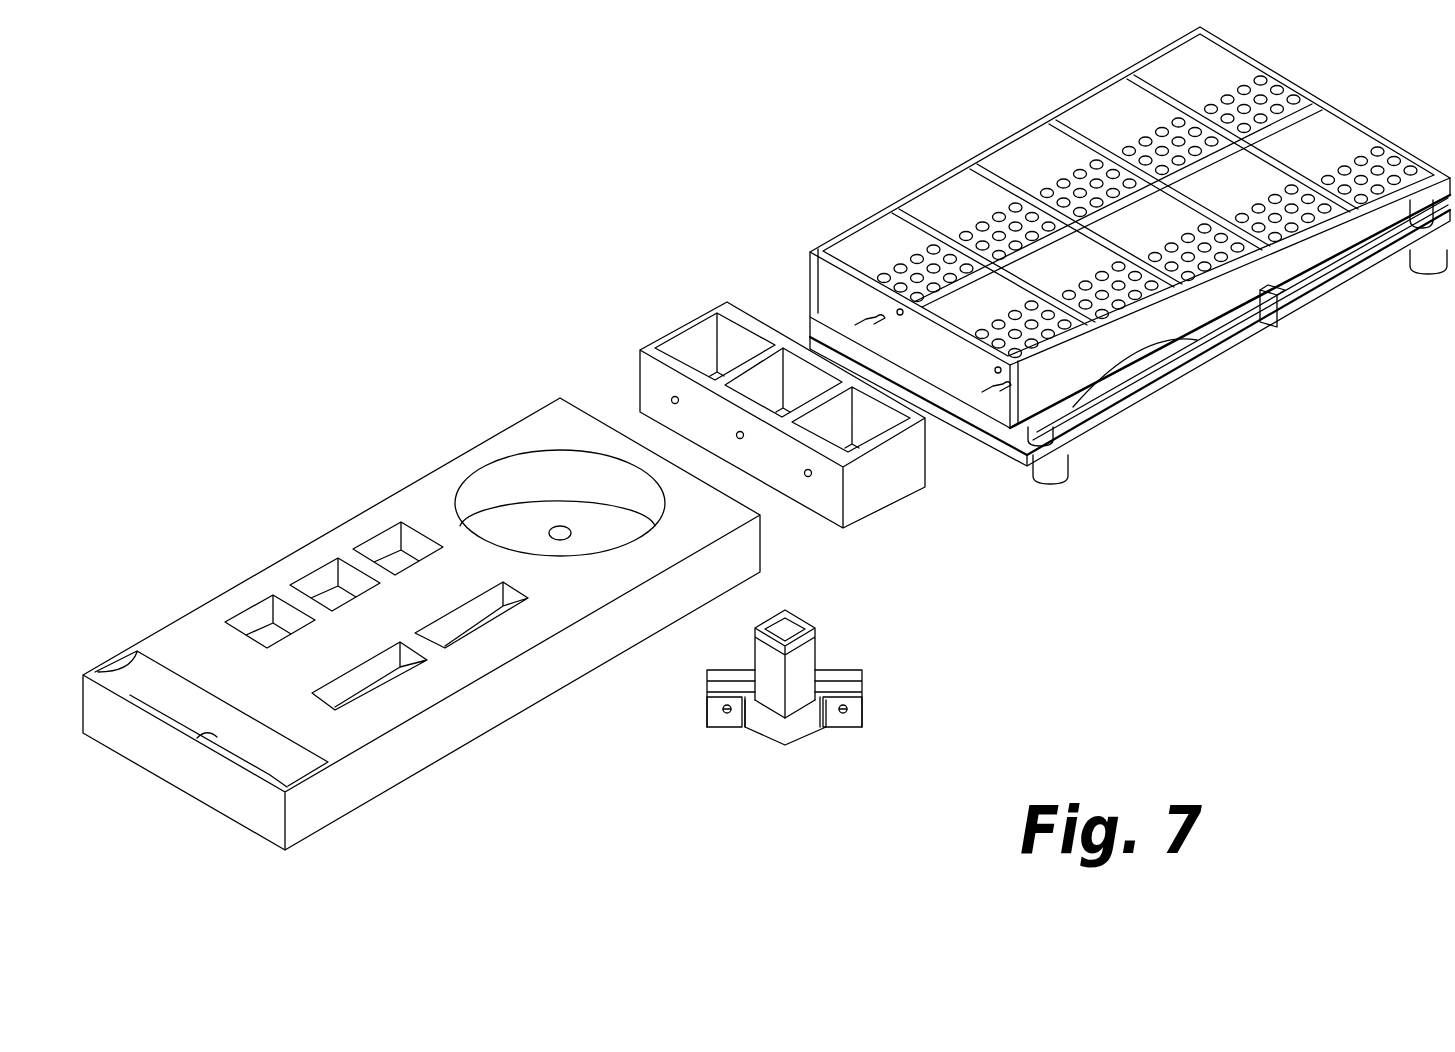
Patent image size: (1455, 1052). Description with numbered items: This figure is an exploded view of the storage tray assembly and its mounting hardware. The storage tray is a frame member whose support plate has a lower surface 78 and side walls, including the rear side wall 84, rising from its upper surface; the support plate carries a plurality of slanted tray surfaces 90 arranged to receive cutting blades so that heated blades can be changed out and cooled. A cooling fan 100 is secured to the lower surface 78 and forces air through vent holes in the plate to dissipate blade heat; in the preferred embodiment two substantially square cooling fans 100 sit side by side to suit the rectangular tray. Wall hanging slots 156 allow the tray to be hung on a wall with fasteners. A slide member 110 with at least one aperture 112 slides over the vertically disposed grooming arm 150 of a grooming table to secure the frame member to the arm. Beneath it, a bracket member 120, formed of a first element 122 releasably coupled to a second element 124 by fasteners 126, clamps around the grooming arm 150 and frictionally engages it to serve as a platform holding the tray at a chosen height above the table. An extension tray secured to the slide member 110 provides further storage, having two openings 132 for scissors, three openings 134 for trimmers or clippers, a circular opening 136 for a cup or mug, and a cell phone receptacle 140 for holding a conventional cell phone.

The lower surface 78 is at (1012, 480).
The rear side wall 84 is at (958, 375).
The slanted tray surfaces 90 is at (1165, 277).
The cooling fan 100 is at (1323, 292).
The slide member 110 is at (680, 310).
The aperture 112 is at (688, 345).
The bracket member 120 is at (819, 692).
The first element 122 is at (862, 672).
The second element 124 is at (862, 722).
The fasteners 126 is at (843, 720).
The openings 132 is at (385, 665).
The openings 134 is at (385, 543).
The circular opening 136 is at (598, 545).
The cell phone receptacle 140 is at (273, 763).
The grooming arm 150 is at (795, 615).
The wall hanging slots 156 is at (868, 313).